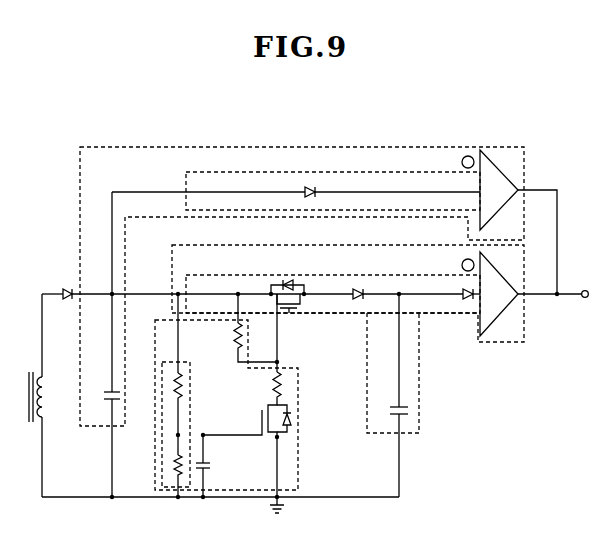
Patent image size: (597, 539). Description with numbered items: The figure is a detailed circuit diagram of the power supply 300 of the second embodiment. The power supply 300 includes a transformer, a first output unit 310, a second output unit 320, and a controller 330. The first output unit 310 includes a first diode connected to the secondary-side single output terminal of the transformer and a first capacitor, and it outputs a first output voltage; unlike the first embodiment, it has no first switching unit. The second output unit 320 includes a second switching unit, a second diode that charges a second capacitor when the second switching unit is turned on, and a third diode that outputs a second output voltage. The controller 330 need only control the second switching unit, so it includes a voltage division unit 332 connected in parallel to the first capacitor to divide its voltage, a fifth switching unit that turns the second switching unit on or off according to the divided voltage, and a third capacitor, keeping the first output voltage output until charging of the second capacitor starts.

The power supply 300 is at (54, 126).
The first output unit 310 is at (80, 205).
The second output unit 320 is at (419, 380).
The controller 330 is at (298, 457).
The voltage divider 332 is at (190, 386).